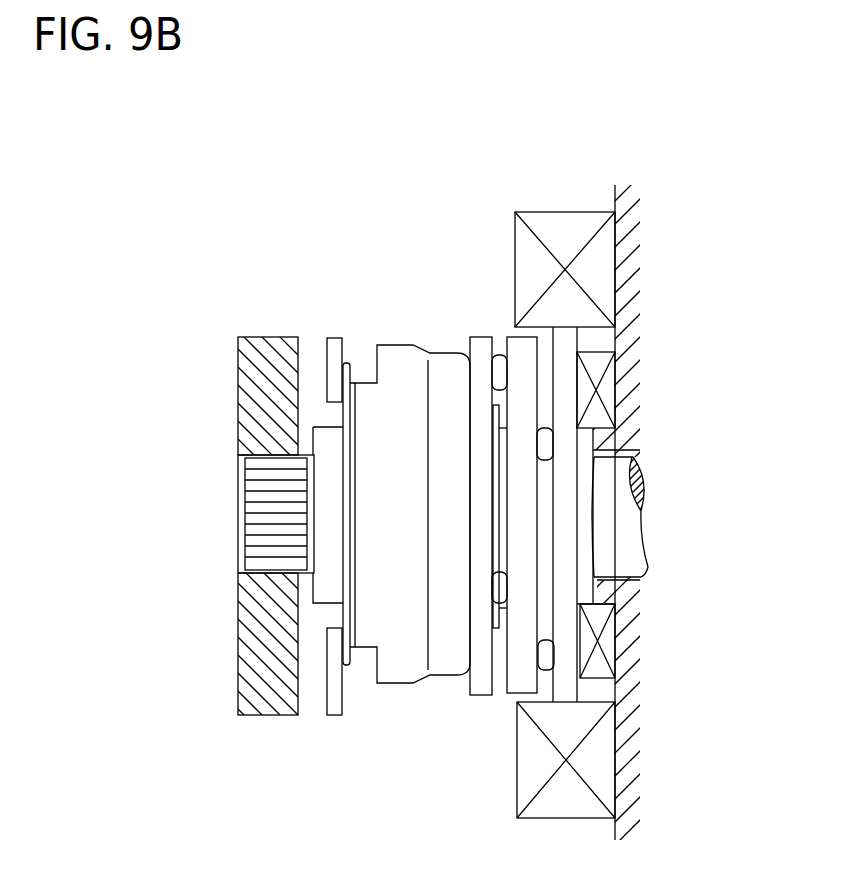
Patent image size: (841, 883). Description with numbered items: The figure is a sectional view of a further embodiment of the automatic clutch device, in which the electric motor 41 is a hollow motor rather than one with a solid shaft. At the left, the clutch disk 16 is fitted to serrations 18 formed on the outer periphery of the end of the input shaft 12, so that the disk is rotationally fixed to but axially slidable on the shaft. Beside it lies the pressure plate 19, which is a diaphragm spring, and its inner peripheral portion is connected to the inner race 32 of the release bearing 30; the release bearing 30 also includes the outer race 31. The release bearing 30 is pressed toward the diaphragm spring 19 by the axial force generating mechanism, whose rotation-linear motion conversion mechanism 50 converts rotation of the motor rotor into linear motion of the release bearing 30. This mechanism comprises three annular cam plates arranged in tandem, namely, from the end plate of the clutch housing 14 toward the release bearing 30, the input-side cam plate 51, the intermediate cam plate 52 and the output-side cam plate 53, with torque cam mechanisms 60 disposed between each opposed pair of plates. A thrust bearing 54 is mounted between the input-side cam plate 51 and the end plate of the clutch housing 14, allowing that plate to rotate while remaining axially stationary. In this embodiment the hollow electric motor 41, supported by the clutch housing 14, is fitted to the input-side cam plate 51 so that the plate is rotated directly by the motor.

The input shaft 12 is at (633, 533).
The clutch housing 14 is at (625, 190).
The clutch disk 16 is at (258, 340).
The serrations 18 is at (253, 497).
The pressure plate 19 is at (329, 712).
The release bearing 30 is at (396, 332).
The outer race 31 is at (417, 348).
The inner race 32 is at (350, 382).
The electric motor 41 is at (545, 212).
The rotation-linear motion conversion mechanism 50 is at (590, 487).
The input-side cam plate 51 is at (570, 688).
The intermediate cam plate 52 is at (516, 710).
The output-side cam plate 53 is at (483, 695).
The thrust bearing 54 is at (605, 388).
The torque cam mechanisms 60 is at (482, 598).